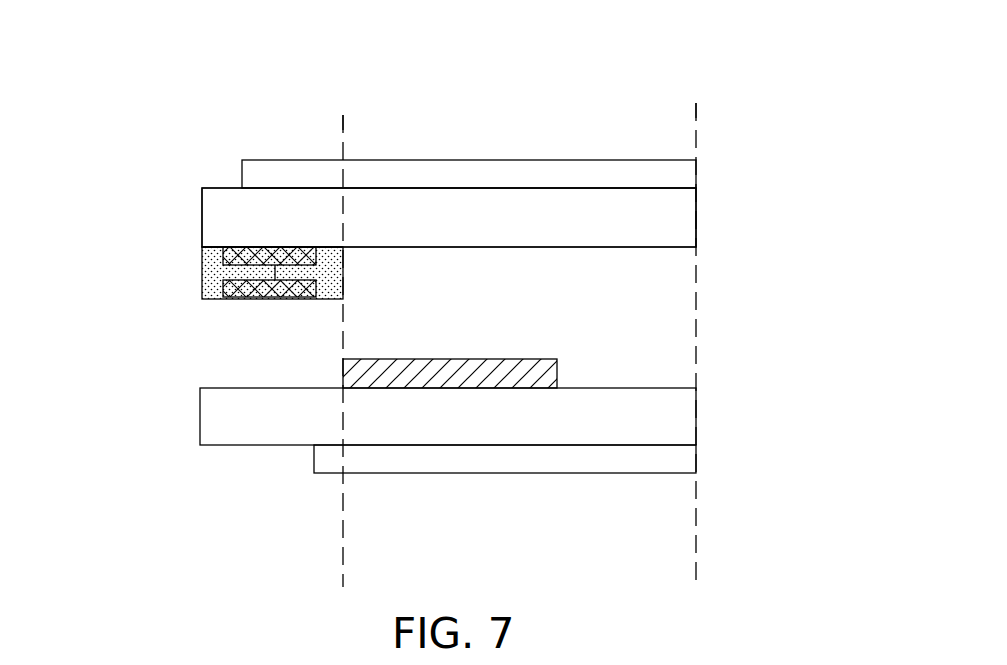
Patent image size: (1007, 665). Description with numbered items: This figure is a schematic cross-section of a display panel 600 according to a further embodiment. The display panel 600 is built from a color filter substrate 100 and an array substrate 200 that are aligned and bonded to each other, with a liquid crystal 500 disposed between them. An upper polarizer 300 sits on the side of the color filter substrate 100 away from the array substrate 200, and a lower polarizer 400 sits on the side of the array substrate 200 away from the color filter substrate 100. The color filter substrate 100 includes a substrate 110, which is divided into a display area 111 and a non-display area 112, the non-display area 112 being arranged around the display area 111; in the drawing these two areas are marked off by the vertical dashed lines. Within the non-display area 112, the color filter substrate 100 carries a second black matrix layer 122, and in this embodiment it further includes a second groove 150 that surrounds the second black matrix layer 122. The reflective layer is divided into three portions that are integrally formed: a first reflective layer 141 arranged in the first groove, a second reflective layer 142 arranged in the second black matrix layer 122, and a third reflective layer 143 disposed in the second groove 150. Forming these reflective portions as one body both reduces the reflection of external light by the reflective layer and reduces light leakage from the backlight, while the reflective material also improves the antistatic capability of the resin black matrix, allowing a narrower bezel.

The display panel 600 is at (773, 86).
The non-display area 112 is at (296, 123).
The display area 111 is at (547, 123).
The upper polarizer 300 is at (678, 165).
The color filter substrate 100 is at (678, 228).
The substrate 110 is at (449, 217).
The second groove 150 is at (205, 247).
The second black matrix layer 122 is at (204, 248).
The third reflective layer 143 is at (207, 268).
The second reflective layer 142 is at (263, 267).
The first reflective layer 141 is at (309, 296).
The liquid crystal 500 is at (557, 378).
The array substrate 200 is at (679, 402).
The lower polarizer 400 is at (679, 462).